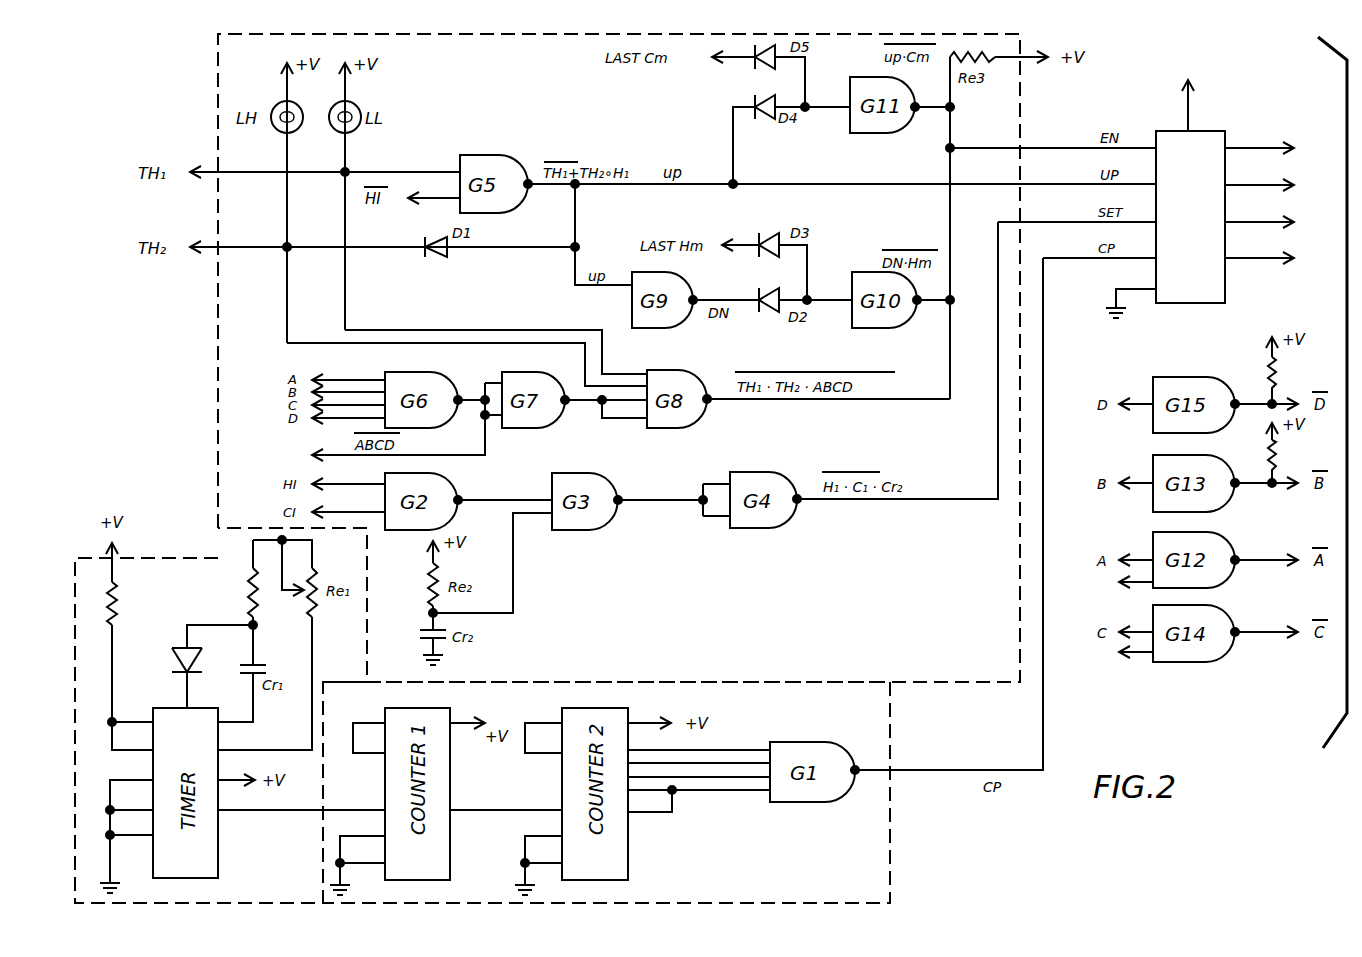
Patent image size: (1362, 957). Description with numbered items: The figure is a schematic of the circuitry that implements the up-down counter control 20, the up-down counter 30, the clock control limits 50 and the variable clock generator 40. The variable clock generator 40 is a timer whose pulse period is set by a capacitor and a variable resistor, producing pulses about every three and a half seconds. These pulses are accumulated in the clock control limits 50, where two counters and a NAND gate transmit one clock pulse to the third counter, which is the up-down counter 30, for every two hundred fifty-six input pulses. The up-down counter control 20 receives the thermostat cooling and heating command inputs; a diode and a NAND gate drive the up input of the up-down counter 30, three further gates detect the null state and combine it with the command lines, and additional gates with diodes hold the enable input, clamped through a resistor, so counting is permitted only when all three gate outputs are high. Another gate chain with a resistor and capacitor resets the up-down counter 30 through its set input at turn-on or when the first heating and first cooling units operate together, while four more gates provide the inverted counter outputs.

The up-down counter control 20 is at (214, 350).
The up-down counter 30 is at (1228, 140).
The variable clock generator 40 is at (186, 552).
The clock control limits 50 is at (895, 845).